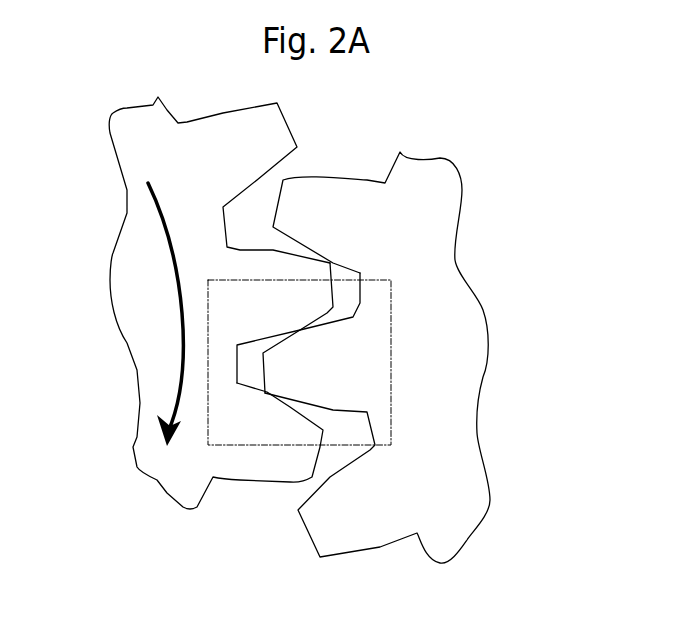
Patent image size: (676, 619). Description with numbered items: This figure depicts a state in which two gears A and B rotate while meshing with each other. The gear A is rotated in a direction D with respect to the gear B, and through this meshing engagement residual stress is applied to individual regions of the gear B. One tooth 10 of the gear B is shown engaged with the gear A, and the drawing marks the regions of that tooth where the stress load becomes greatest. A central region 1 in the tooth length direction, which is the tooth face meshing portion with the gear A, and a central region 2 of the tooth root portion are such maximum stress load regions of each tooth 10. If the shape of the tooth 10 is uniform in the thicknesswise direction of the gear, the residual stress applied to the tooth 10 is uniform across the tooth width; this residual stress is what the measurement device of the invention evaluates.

The tooth 10 is at (378, 276).
The central region in a tooth length direction 1 is at (312, 342).
The central region of a tooth root portion 2 is at (375, 295).
The gear A is at (222, 208).
The gear B is at (367, 410).
The direction D is at (180, 303).